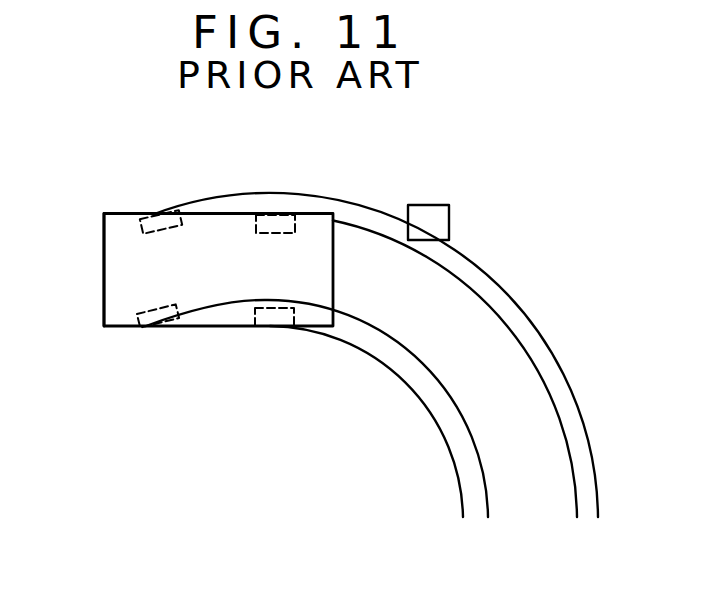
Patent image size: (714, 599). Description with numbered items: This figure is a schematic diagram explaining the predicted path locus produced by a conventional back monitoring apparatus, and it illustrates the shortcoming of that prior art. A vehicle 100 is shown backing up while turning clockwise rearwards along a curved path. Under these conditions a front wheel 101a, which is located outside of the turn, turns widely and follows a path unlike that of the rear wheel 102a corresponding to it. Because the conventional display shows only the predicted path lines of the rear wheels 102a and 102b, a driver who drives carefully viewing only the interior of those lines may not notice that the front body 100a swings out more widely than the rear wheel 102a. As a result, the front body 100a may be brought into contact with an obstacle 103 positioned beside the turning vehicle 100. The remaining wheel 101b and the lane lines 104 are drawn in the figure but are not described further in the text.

The vehicle 100 is at (224, 328).
The front body 100a is at (104, 213).
The front wheel 101a is at (168, 212).
The front right wheel 101b is at (146, 327).
The rear wheel 102a is at (283, 215).
The rear wheel 102b is at (256, 328).
The obstacle 103 is at (438, 205).
The lane boundary lines 104 is at (583, 424).